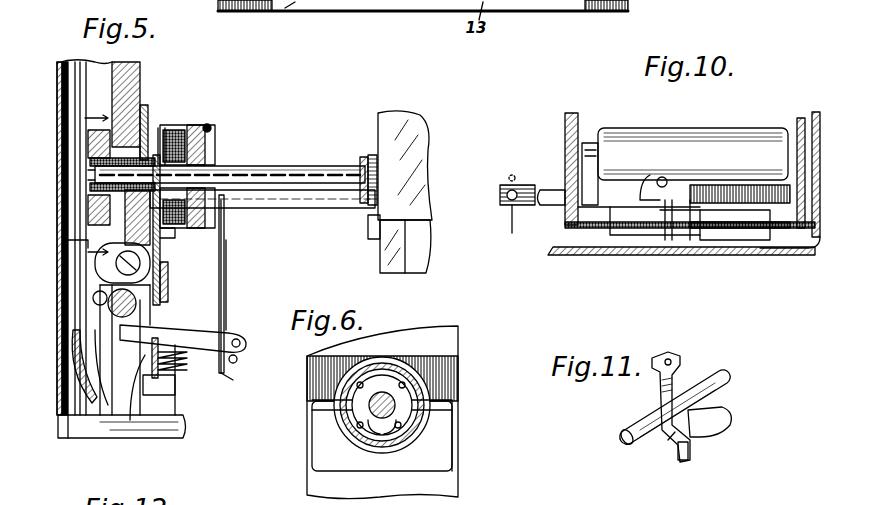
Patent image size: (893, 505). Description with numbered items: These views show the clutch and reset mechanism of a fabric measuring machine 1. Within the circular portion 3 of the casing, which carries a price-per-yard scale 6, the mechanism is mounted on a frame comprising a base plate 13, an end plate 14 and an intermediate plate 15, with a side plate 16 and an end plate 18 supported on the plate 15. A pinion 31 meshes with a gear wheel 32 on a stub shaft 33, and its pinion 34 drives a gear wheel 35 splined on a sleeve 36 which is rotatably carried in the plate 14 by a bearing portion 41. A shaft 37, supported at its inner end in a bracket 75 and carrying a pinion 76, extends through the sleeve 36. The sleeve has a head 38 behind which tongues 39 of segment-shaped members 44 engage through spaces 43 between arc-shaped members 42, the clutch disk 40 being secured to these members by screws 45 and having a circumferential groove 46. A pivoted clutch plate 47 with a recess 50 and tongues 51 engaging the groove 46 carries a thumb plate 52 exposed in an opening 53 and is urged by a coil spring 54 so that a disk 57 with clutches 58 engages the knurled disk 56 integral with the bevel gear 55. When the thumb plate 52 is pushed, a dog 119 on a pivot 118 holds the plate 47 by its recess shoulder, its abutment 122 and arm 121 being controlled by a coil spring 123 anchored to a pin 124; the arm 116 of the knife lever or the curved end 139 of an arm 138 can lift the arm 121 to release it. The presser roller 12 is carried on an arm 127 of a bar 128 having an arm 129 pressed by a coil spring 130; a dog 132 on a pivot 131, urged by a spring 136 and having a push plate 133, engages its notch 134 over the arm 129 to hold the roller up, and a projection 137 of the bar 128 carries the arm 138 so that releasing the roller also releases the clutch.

In FIG. 5, the base plate 1 is at (57, 100).
In FIG. 10, the base plate 1 is at (582, 253).
In FIG. 5, the circular portion of the casing 3 is at (78, 60).
In FIG. 5, the price-per-yard scale 6 is at (115, 189).
In FIG. 10, the presser roller 12 is at (718, 133).
In FIG. 5, the base plate 13 is at (165, 438).
In FIG. 5, the end plate 14 is at (140, 73).
In FIG. 6, the end plate 14 is at (310, 483).
In FIG. 5, the intermediate plate 15 is at (399, 244).
In FIG. 10, the intermediate plate 15 is at (565, 122).
In FIG. 5, the side plate 16 is at (420, 195).
In FIG. 10, the end plate 18 is at (800, 118).
In FIG. 5, the pinion 31 is at (132, 422).
In FIG. 5, the gear wheel 32 is at (160, 290).
In FIG. 5, the stub shaft 33 is at (168, 270).
In FIG. 5, the pinion 34 is at (226, 288).
In FIG. 5, the gear wheel 35 is at (158, 125).
In FIG. 5, the sleeve 36 is at (166, 126).
In FIG. 6, the sleeve 36 is at (430, 416).
In FIG. 5, the shaft 37 is at (268, 168).
In FIG. 6, the shaft 37 is at (352, 410).
In FIG. 5, the head 38 is at (90, 207).
In FIG. 6, the head 38 is at (345, 401).
In FIG. 5, the tongues 39 is at (90, 161).
In FIG. 6, the tongues 39 is at (395, 380).
In FIG. 5, the clutch disk 40 is at (92, 138).
In FIG. 6, the clutch disk 40 is at (366, 445).
In FIG. 5, the bearing portion 41 is at (162, 233).
In FIG. 5, the arc-shaped members 42 is at (88, 184).
In FIG. 6, the arc-shaped members 42 is at (430, 396).
In FIG. 6, the spaces 43 is at (425, 432).
In FIG. 5, the segment-shaped members 44 is at (170, 122).
In FIG. 6, the segment-shaped members 44 is at (385, 385).
In FIG. 6, the screws 45 is at (445, 347).
In FIG. 5, the circumferential groove 46 is at (148, 108).
In FIG. 6, the circumferential groove 46 is at (425, 372).
In FIG. 5, the plate 47 is at (75, 248).
In FIG. 6, the plate 47 is at (452, 462).
In FIG. 6, the recess 50 is at (395, 450).
In FIG. 6, the tongues 51 is at (452, 406).
In FIG. 5, the thumb plate 52 is at (78, 440).
In FIG. 5, the opening 53 is at (72, 330).
In FIG. 5, the coil spring 54 is at (94, 298).
In FIG. 5, the bevel gear 55 is at (214, 142).
In FIG. 5, the knurled disk 56 is at (212, 126).
In FIG. 5, the disk 57 is at (184, 145).
In FIG. 5, the clutches 58 is at (192, 120).
In FIG. 5, the bracket 75 is at (361, 165).
In FIG. 5, the pinion 76 is at (372, 156).
In FIG. 5, the arm 116 is at (237, 358).
In FIG. 5, the pivot 118 is at (233, 338).
In FIG. 5, the dog 119 is at (138, 302).
In FIG. 5, the arm 121 is at (183, 338).
In FIG. 5, the abutment 122 is at (115, 438).
In FIG. 5, the coil spring 123 is at (188, 365).
In FIG. 5, the pin 124 is at (157, 380).
In FIG. 10, the arm 127 is at (590, 143).
In FIG. 10, the bar 128 is at (654, 221).
In FIG. 11, the bar 128 is at (620, 440).
In FIG. 10, the arm 129 is at (672, 234).
In FIG. 11, the arm 129 is at (688, 448).
In FIG. 10, the coil spring 130 is at (776, 228).
In FIG. 10, the pivot 131 is at (660, 178).
In FIG. 10, the dog 132 is at (665, 242).
In FIG. 11, the dog 132 is at (688, 382).
In FIG. 10, the push plate 133 is at (674, 224).
In FIG. 11, the push plate 133 is at (732, 420).
In FIG. 11, the notch 134 is at (670, 445).
In FIG. 10, the spring 136 is at (700, 183).
In FIG. 5, the projection 137 is at (352, 208).
In FIG. 10, the projection 137 is at (520, 187).
In FIG. 5, the arm 138 is at (225, 265).
In FIG. 10, the arm 138 is at (545, 207).
In FIG. 5, the curved end 139 is at (228, 375).
In FIG. 10, the curved end 139 is at (510, 176).